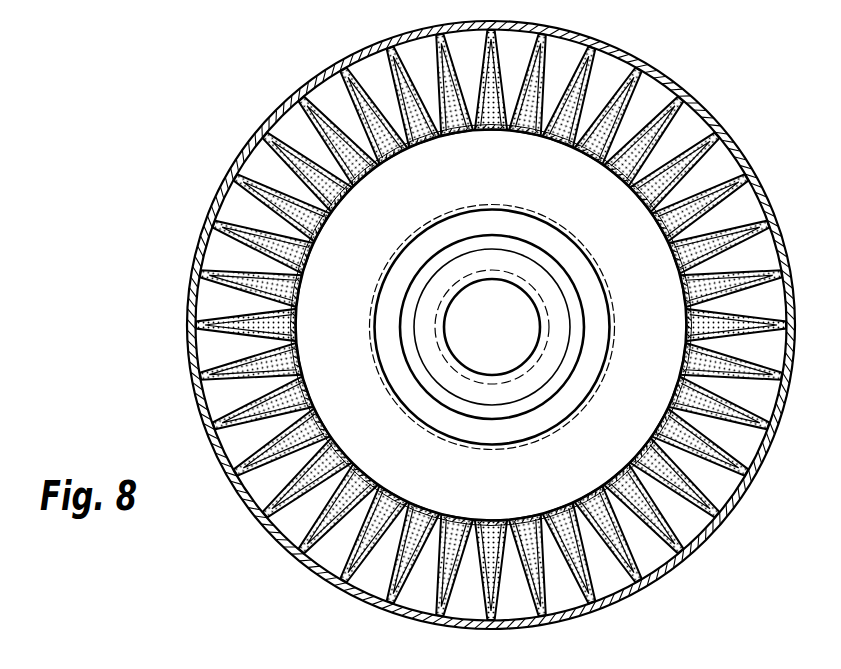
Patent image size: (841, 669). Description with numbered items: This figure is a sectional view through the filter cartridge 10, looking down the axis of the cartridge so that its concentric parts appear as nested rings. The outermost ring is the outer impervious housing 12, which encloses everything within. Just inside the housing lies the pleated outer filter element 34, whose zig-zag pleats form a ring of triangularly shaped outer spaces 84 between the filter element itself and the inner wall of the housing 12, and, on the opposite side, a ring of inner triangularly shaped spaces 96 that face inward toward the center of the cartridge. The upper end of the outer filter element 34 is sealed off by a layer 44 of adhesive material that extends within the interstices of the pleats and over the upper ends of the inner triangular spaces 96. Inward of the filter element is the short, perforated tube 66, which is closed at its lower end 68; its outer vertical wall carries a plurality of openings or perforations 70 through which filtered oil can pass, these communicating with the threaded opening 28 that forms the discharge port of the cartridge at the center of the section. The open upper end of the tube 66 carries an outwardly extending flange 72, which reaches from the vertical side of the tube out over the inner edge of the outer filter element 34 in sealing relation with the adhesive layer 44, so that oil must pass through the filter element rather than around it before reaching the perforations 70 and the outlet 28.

The filter cartridge 10 is at (467, 343).
The outer impervious housing 12 is at (698, 107).
The threaded opening 28 is at (492, 282).
The outer filter element 34 is at (350, 545).
The layer of adhesive material 44 is at (286, 190).
The short perforated tube 66 is at (586, 248).
The lower end of perforated tube 68 is at (533, 378).
The openings or perforations 70 is at (610, 325).
The outwardly extending flange 72 is at (361, 264).
The outer triangular spaces 84 is at (230, 303).
The inner triangular spaces 96 is at (449, 595).